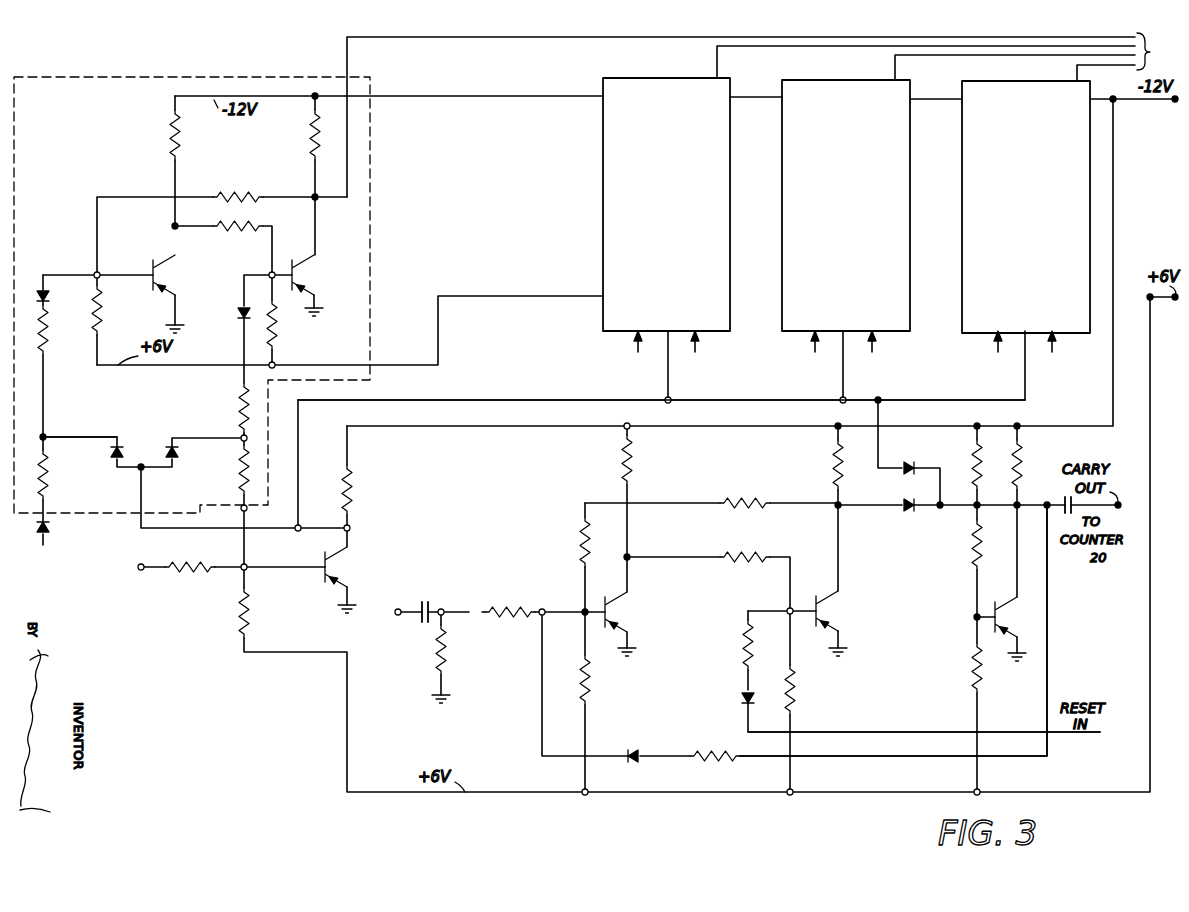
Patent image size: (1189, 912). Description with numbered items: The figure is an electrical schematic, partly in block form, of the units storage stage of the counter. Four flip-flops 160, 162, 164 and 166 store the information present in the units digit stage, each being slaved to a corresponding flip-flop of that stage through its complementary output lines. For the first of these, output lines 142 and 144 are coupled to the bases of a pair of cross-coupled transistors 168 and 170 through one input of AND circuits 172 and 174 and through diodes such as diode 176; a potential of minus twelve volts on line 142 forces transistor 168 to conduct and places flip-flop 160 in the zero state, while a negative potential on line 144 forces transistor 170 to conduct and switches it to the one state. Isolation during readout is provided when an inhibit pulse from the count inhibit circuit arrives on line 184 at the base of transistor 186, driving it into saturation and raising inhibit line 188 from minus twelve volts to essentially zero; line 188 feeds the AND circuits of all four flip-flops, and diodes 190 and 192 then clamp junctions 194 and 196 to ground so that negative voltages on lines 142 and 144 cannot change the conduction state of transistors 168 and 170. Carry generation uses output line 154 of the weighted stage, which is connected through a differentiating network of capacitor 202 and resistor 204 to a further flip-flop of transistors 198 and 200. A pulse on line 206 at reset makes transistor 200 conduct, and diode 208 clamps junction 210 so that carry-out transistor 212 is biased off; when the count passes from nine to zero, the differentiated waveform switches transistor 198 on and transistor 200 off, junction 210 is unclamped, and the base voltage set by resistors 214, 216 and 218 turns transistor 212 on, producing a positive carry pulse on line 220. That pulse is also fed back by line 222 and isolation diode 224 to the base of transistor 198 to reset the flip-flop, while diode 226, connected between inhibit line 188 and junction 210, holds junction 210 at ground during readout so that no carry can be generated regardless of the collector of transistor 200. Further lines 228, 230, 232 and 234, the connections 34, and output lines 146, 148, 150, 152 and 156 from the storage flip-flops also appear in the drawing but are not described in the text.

The timing input line 228 is at (497, 40).
The timing input line 230 is at (792, 50).
The timing input line 232 is at (975, 57).
The timing input line 234 is at (1076, 68).
The input lines 34 is at (1157, 51).
The flip-flop 160 is at (371, 223).
The flip-flop 162 is at (731, 226).
The flip-flop 164 is at (911, 226).
The flip-flop 166 is at (1091, 230).
The transistor 168 is at (293, 258).
The transistor 170 is at (151, 268).
The diode 176 is at (38, 293).
The junction 194 is at (46, 432).
The AND circuit 172 is at (104, 433).
The AND circuit 174 is at (229, 419).
The diode 190 is at (109, 457).
The diode 192 is at (181, 457).
The junction 196 is at (247, 440).
The output line 142 is at (247, 508).
The output line 144 is at (36, 548).
The line 184 is at (146, 572).
The transistor 186 is at (342, 556).
The inhibit line 188 is at (470, 400).
The output line 148 is at (639, 359).
The output line 146 is at (697, 359).
The output line 152 is at (817, 359).
The output line 150 is at (874, 359).
The output line 156 is at (999, 359).
The output line 154 is at (400, 608).
The capacitor 202 is at (436, 600).
The resistor 204 is at (447, 660).
The transistor 198 is at (620, 612).
The transistor 200 is at (830, 610).
The carryout transistor 212 is at (993, 606).
The diode 226 is at (924, 458).
The diode 208 is at (920, 492).
The resistor 214 is at (977, 463).
The junction 210 is at (975, 512).
The resistor 216 is at (975, 556).
The resistor 218 is at (975, 668).
The line 220 is at (1067, 497).
The isolation diode 224 is at (636, 751).
The line 206 is at (924, 722).
The line 222 is at (893, 630).